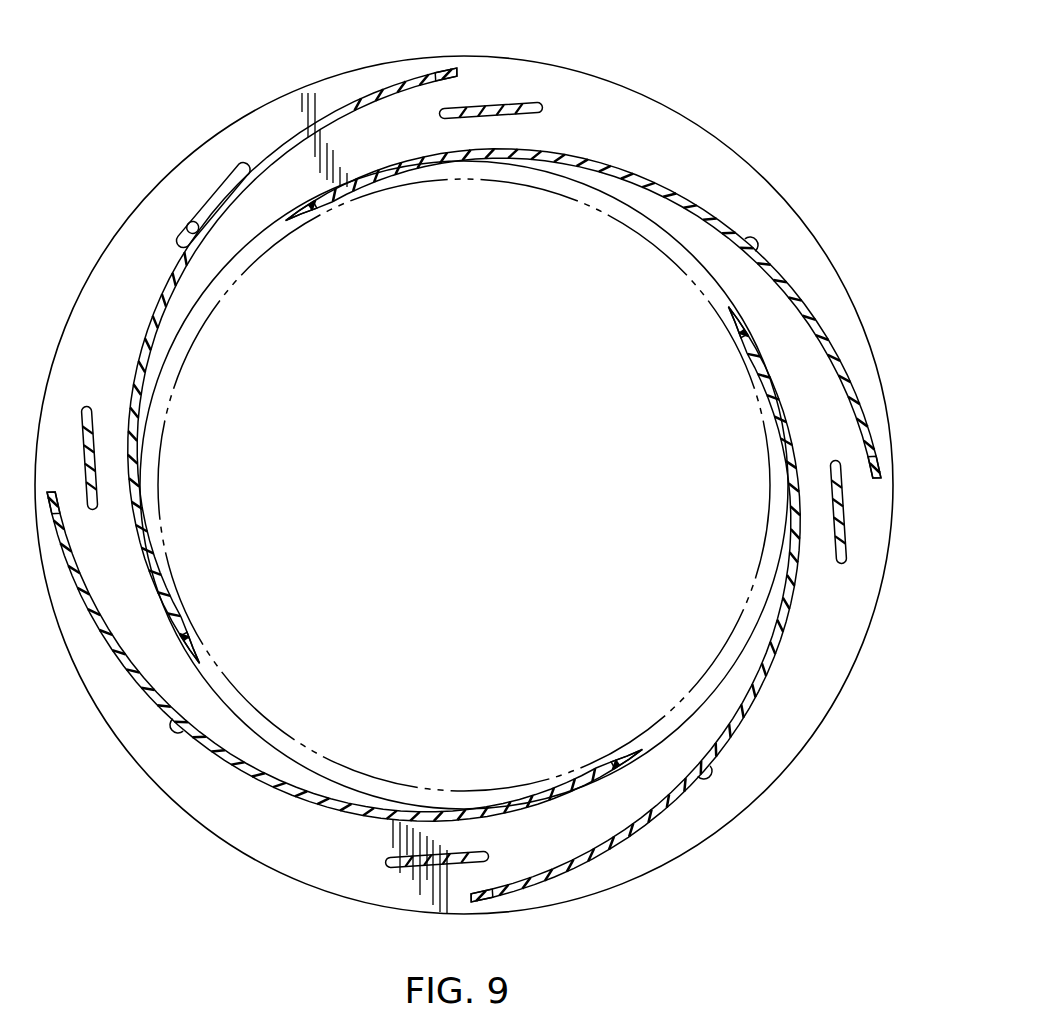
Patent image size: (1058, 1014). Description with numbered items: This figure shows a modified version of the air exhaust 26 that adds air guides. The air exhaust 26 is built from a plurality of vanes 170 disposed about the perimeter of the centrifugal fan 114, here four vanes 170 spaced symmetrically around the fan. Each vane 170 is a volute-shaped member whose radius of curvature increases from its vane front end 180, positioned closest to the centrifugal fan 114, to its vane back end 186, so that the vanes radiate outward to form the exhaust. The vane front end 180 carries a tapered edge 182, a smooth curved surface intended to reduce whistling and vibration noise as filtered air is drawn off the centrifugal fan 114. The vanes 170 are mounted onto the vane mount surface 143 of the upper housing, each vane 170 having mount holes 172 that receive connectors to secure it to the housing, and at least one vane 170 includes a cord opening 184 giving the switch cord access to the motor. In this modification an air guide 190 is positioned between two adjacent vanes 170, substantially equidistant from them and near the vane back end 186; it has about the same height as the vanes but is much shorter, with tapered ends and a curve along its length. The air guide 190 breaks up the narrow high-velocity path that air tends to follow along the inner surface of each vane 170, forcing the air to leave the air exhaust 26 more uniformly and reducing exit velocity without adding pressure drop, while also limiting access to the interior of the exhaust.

The air exhaust 26 is at (685, 125).
The centrifugal fan 114 is at (727, 640).
The vane mount surface 143 is at (252, 828).
The vane 170 is at (362, 90).
The mount hole 172 is at (765, 238).
The vane front end 180 is at (288, 218).
The tapered edge 182 is at (308, 208).
The cord opening 184 is at (195, 223).
The vane back end 186 is at (462, 68).
The air guide 190 is at (520, 101).